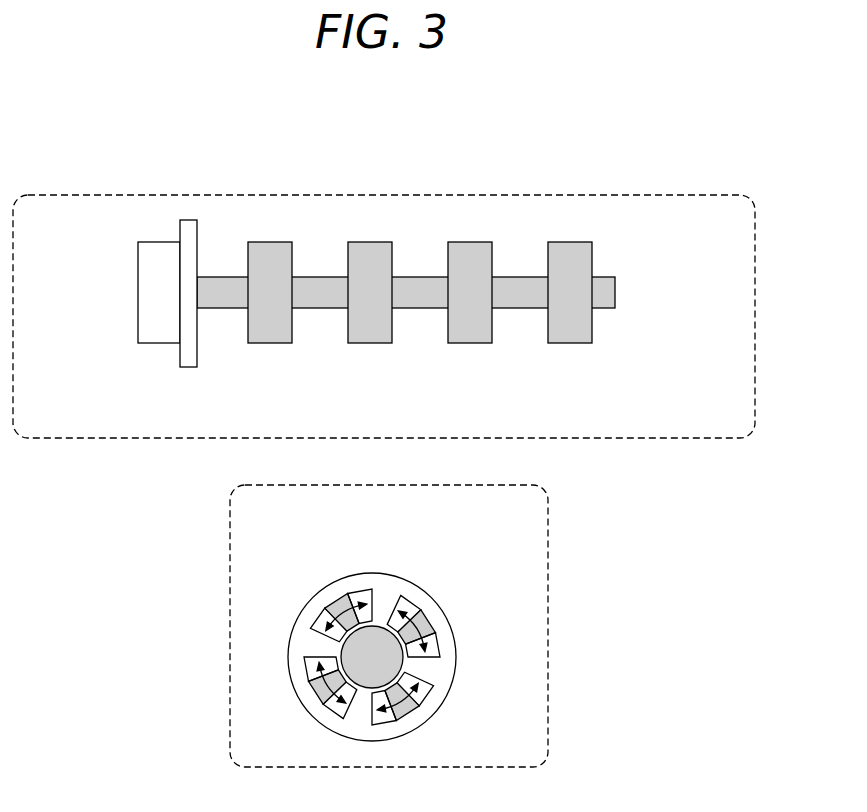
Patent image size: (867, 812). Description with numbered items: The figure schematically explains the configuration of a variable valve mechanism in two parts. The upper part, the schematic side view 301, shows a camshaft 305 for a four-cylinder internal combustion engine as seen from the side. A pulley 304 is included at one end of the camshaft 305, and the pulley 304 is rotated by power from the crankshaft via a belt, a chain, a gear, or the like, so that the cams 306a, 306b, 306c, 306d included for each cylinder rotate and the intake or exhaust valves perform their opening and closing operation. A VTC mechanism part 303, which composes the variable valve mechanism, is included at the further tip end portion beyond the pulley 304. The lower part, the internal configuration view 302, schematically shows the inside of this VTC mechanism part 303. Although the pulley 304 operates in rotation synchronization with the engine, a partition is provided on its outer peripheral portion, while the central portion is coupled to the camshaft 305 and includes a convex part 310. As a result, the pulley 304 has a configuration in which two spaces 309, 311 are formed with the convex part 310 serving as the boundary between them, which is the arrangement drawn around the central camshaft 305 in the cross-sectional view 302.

The schematic side view of the camshaft 301 is at (105, 195).
The internal configuration view of the VTC mechanism part 302 is at (230, 602).
The VTC mechanism part 303 is at (138, 297).
The pulley 304 is at (188, 367).
The camshaft 305 is at (608, 295).
The cam 306a is at (268, 343).
The cam 306b is at (368, 343).
The cam 306c is at (468, 343).
The cam 306d is at (568, 343).
The space 309 is at (403, 592).
The convex part 310 is at (425, 620).
The space 311 is at (433, 645).